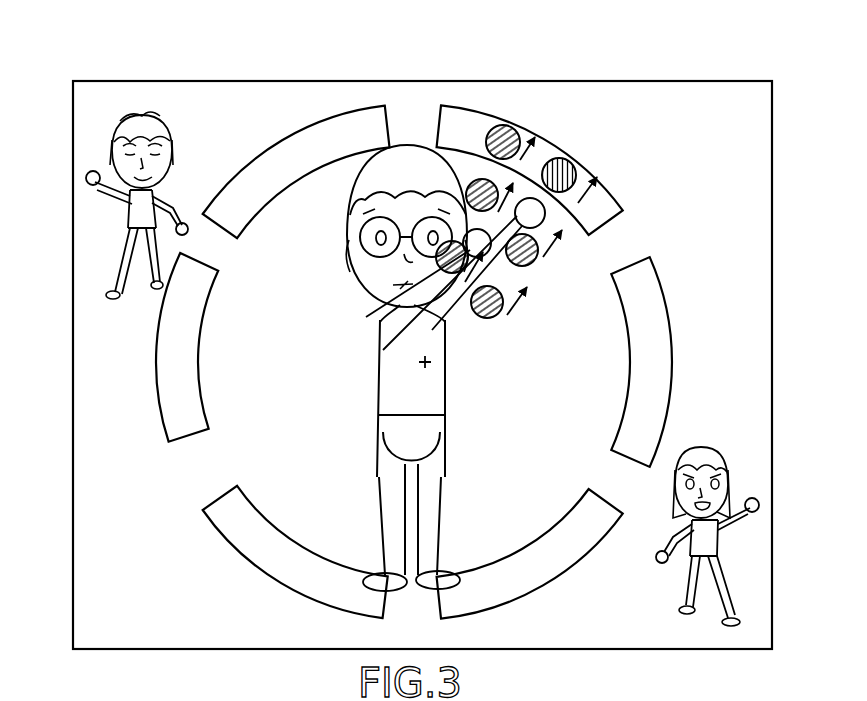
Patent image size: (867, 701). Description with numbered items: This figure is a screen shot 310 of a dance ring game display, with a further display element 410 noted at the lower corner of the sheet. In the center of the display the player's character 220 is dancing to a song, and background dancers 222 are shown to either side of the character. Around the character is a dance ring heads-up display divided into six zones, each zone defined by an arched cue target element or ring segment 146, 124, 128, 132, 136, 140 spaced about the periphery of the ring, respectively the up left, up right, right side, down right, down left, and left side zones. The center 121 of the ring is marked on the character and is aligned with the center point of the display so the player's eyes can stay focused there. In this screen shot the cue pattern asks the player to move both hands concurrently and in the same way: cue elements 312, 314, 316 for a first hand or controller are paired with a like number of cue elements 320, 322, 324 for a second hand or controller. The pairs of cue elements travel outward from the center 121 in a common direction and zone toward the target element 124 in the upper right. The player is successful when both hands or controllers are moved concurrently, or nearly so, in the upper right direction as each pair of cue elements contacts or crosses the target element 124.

The screen shot 310 is at (88, 76).
The display area 410 is at (64, 700).
The ring segment 146 is at (275, 148).
The target element 124 is at (568, 152).
The ring segment 128 is at (663, 287).
The ring segment 132 is at (457, 614).
The ring segment 136 is at (260, 570).
The ring segment 140 is at (163, 442).
The player's character 220 is at (436, 484).
The center 121 is at (433, 359).
The cue element 312 is at (373, 313).
The cue element 314 is at (467, 184).
The cue element 316 is at (515, 127).
The cue element 324 is at (588, 173).
The cue element 322 is at (539, 263).
The cue element 320 is at (497, 316).
The background dancers 222 is at (117, 310).